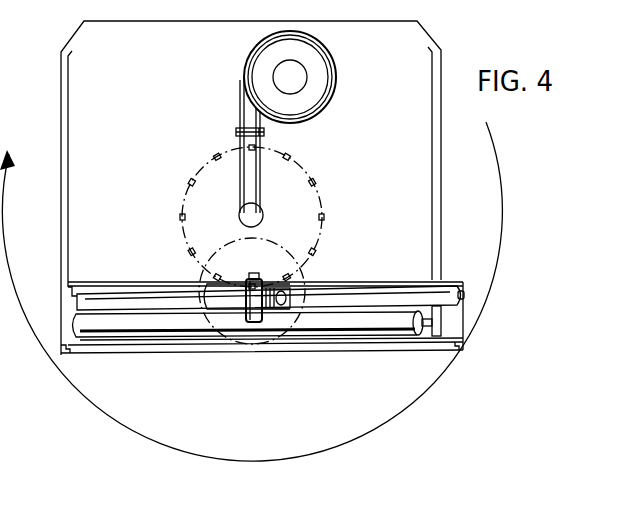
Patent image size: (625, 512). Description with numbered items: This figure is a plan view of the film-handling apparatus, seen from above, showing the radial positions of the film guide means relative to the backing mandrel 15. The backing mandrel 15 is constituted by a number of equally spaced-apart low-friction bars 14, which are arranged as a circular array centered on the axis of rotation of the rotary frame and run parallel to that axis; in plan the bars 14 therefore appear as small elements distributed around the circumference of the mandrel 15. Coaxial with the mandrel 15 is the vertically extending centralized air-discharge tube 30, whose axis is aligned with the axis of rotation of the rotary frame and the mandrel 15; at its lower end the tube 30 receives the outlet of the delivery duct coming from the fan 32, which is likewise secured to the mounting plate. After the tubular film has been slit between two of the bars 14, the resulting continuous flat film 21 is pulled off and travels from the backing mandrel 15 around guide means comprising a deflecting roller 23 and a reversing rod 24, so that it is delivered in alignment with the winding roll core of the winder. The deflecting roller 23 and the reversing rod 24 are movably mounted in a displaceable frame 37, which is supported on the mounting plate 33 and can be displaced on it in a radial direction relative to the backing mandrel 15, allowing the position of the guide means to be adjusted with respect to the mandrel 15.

The low-friction bars 14 is at (291, 157).
The backing mandrel 15 is at (333, 204).
The flat film 21 is at (184, 194).
The deflecting roller 23 is at (350, 297).
The reversing rod 24 is at (344, 326).
The air-discharge tube 30 is at (249, 216).
The fan 32 is at (245, 66).
The mounting plate 33 is at (428, 173).
The displaceable frame 37 is at (458, 341).